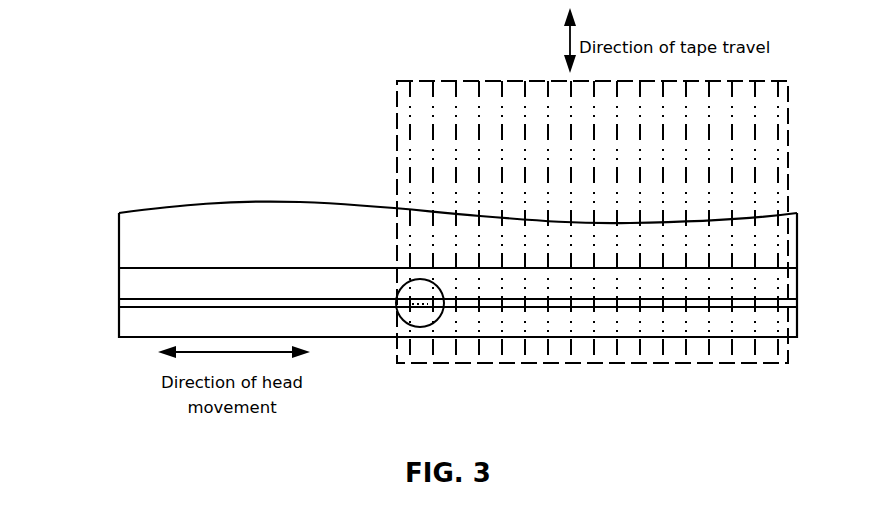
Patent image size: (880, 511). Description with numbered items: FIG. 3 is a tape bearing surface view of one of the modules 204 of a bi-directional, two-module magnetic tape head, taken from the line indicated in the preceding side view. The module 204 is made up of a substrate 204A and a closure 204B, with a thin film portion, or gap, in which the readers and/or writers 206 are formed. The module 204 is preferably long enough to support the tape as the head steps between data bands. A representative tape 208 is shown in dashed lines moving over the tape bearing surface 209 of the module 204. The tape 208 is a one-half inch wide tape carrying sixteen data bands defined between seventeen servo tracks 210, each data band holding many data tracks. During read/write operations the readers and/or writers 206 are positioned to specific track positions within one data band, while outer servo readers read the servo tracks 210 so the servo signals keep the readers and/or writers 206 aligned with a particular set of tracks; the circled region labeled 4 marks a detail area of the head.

The module 204 is at (160, 198).
The substrate 204A is at (250, 203).
The closure 204B is at (118, 325).
The readers and/or writers 206 is at (403, 301).
The tape 208 is at (397, 84).
The tape bearing surface 209 is at (305, 288).
The servo tracks 210 is at (503, 160).
The detail region of FIG. 4 is at (430, 328).